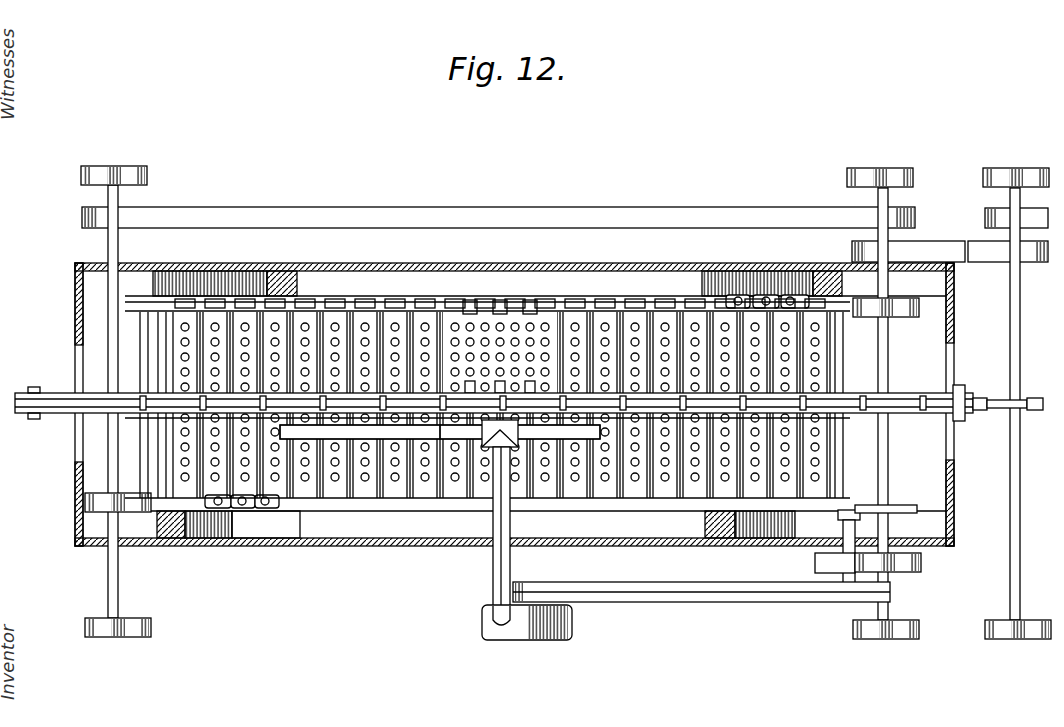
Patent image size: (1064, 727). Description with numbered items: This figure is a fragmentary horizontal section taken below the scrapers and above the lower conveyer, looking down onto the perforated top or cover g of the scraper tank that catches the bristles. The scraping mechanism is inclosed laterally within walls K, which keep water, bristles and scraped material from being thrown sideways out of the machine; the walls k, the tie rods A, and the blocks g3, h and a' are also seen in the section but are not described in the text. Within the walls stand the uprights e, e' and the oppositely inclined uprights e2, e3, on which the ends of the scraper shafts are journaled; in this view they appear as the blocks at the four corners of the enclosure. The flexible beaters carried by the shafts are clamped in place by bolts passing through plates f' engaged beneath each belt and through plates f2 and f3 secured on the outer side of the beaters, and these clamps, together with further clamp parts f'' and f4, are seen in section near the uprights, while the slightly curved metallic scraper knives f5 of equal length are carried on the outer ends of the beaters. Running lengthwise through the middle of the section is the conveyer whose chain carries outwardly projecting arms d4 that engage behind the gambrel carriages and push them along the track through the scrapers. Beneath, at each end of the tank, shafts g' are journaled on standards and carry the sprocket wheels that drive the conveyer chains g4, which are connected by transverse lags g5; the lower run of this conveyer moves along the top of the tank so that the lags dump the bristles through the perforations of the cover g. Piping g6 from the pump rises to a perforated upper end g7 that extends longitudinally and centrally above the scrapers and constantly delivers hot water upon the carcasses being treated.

The frame casing k is at (954, 300).
The walls K is at (425, 255).
The tie rod with nuts A is at (566, 402).
The upright e is at (228, 540).
The upright e' is at (734, 526).
The oppositely inclined upright e2 is at (253, 276).
The oppositely inclined upright e3 is at (757, 302).
The plate f' is at (227, 540).
The clamp f'' is at (251, 542).
The plate f2 is at (781, 300).
The plate f3 is at (737, 270).
The clamp f4 is at (221, 510).
The scraper knife f5 is at (795, 303).
The perforated top or cover g is at (487, 383).
The shaft g' is at (721, 556).
The bracket g3 is at (905, 500).
The conveyer chain g4 is at (428, 494).
The transverse lag g5 is at (360, 480).
The piping g6 is at (520, 545).
The perforated upper end of piping g7 is at (428, 440).
The bracket h is at (466, 552).
The outwardly projecting arm d4 is at (889, 420).
The foot block a' is at (527, 636).